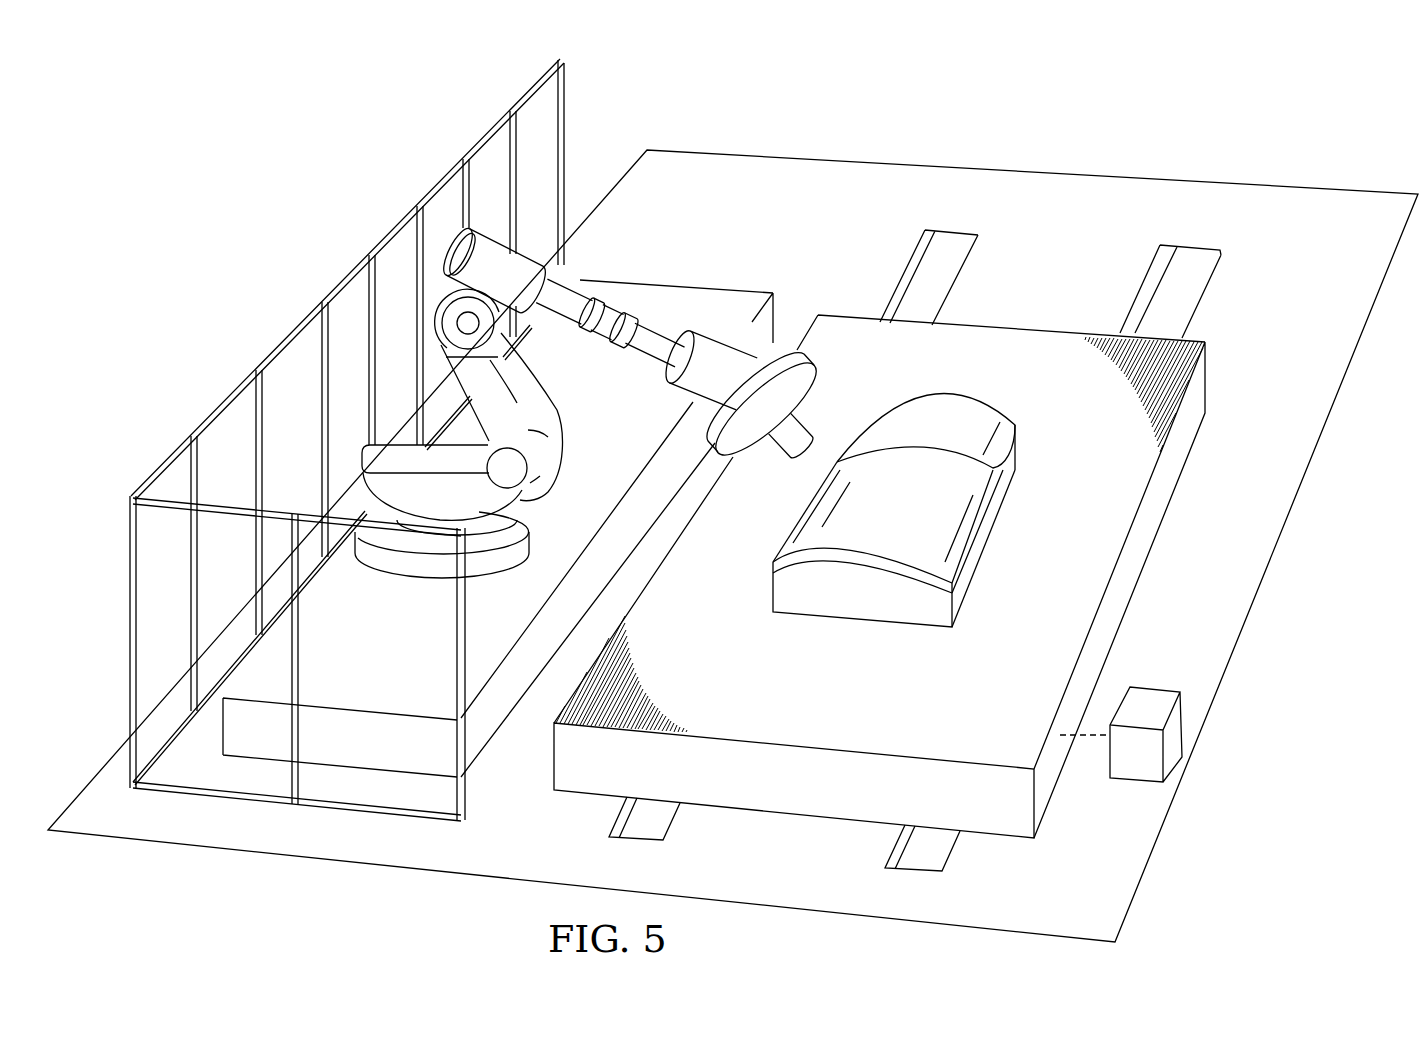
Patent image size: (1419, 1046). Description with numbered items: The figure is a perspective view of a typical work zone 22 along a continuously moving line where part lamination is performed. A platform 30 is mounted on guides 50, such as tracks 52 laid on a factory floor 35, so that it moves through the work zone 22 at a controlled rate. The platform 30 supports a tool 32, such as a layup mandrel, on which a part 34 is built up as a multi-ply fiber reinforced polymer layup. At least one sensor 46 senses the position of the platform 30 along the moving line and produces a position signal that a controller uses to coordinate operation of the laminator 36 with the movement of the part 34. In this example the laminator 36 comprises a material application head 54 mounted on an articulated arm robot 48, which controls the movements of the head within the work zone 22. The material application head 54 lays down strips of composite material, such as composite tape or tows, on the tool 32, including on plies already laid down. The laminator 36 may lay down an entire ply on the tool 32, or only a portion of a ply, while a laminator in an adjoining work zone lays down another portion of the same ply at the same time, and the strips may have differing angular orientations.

The work zone 22 is at (1229, 113).
The platform 30 is at (1010, 322).
The tool 32 is at (863, 607).
The part 34 is at (947, 398).
The factory floor 35 is at (1062, 180).
The laminator 36 is at (620, 257).
The sensor 46 is at (1153, 688).
The articulated arm robot 48 is at (591, 387).
The guides 50 is at (566, 834).
The tracks 52 is at (952, 232).
The material application head 54 is at (787, 452).